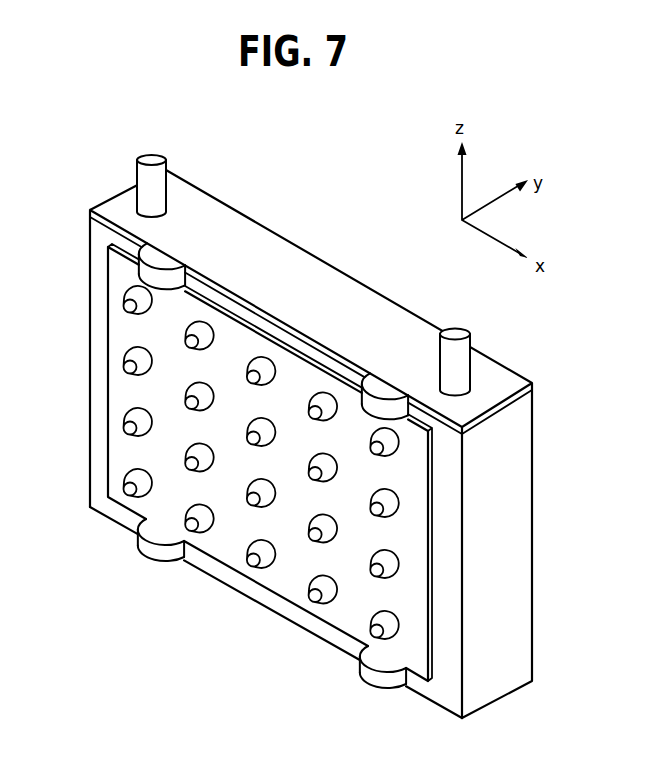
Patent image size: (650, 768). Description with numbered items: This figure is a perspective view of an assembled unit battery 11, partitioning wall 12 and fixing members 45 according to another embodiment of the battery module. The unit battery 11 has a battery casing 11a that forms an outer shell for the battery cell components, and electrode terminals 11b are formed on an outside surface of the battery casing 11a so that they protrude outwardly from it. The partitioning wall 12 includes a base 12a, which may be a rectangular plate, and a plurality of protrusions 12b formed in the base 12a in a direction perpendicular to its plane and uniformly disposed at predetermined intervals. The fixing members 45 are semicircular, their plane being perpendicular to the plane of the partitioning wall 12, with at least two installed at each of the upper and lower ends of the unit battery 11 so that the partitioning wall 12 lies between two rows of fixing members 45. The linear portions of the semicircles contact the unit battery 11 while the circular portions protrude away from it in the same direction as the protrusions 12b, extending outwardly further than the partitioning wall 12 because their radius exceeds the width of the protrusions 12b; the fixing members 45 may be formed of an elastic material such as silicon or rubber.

The unit battery 11 is at (327, 248).
The battery casing 11a is at (90, 283).
The electrode terminals 11b is at (137, 171).
The partitioning wall 12 is at (108, 381).
The base 12a is at (222, 557).
The protrusions 12b is at (316, 595).
The fixing members 45 is at (140, 552).